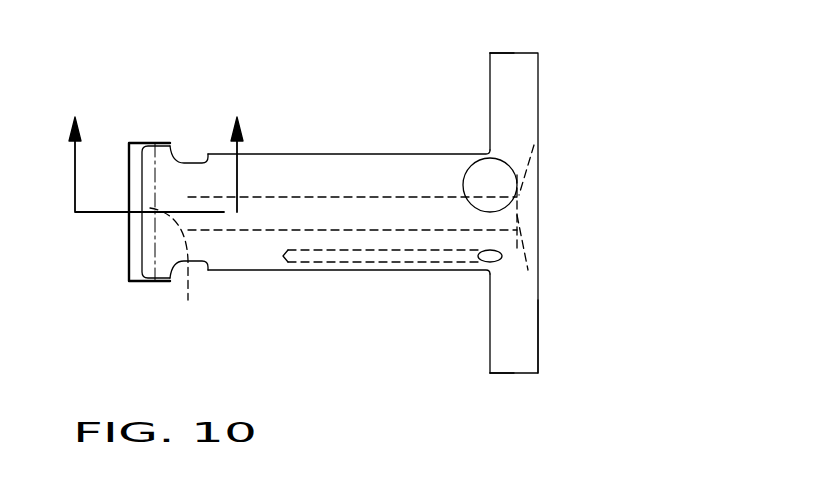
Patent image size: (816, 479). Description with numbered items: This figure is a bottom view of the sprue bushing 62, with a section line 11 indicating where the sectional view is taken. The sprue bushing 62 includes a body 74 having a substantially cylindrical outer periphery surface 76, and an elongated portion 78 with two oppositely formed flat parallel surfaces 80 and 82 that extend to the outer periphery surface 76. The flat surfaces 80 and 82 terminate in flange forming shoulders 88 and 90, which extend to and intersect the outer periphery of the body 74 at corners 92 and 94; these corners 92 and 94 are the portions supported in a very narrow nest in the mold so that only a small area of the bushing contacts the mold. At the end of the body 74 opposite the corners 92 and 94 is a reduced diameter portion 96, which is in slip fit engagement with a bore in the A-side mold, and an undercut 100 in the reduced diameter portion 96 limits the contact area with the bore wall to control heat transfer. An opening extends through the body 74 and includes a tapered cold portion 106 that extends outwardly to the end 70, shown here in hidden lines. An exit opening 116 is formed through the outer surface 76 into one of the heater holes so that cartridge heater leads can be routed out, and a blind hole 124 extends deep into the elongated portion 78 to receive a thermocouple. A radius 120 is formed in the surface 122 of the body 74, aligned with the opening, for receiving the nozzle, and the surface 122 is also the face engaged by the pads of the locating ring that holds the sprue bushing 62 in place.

The section line 11- 11 is at (157, 149).
The sprue bushing 62 is at (373, 66).
The end 70 is at (128, 243).
The body 74 is at (540, 80).
The outer periphery surface 76 is at (440, 167).
The elongated portion 78 is at (285, 173).
The flat parallel surface 80 is at (337, 153).
The flat parallel surface 82 is at (267, 272).
The flange forming shoulder 88 is at (490, 70).
The flange forming shoulder 90 is at (488, 353).
The corner 92 is at (490, 52).
The corner 94 is at (490, 375).
The reduced diameter portion 96 is at (137, 281).
The undercut 100 is at (192, 163).
The cold portion 106 is at (176, 271).
The exit opening 116 is at (498, 168).
The radius 120 is at (540, 240).
The surface 122 is at (538, 335).
The blind hole 124 is at (490, 262).